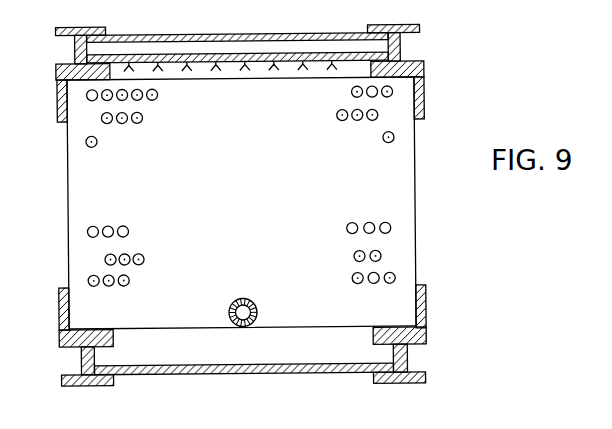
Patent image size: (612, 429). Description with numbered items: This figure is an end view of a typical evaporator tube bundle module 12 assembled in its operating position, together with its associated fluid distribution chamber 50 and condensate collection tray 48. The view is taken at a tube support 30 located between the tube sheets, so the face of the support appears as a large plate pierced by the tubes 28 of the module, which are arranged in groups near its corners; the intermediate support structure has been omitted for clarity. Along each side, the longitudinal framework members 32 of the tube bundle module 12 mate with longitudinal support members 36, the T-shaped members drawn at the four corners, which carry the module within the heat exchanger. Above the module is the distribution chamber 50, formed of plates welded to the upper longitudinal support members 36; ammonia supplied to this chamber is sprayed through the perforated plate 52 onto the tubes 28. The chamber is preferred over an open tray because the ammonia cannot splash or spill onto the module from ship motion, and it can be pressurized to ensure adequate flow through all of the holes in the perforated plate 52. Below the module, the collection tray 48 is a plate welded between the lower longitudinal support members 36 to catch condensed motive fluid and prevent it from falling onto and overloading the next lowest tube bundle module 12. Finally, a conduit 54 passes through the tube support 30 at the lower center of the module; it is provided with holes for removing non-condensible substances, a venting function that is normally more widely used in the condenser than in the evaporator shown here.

The tube bundle module 12 is at (239, 193).
The tubes 28 is at (98, 142).
The tube support 30 is at (92, 165).
The longitudinal framework members 32 is at (57, 94).
The longitudinal support members 36 is at (57, 32).
The collection tray 48 is at (342, 366).
The distribution chamber 50 is at (293, 51).
The perforated plate 52 is at (208, 56).
The conduit 54 is at (228, 308).